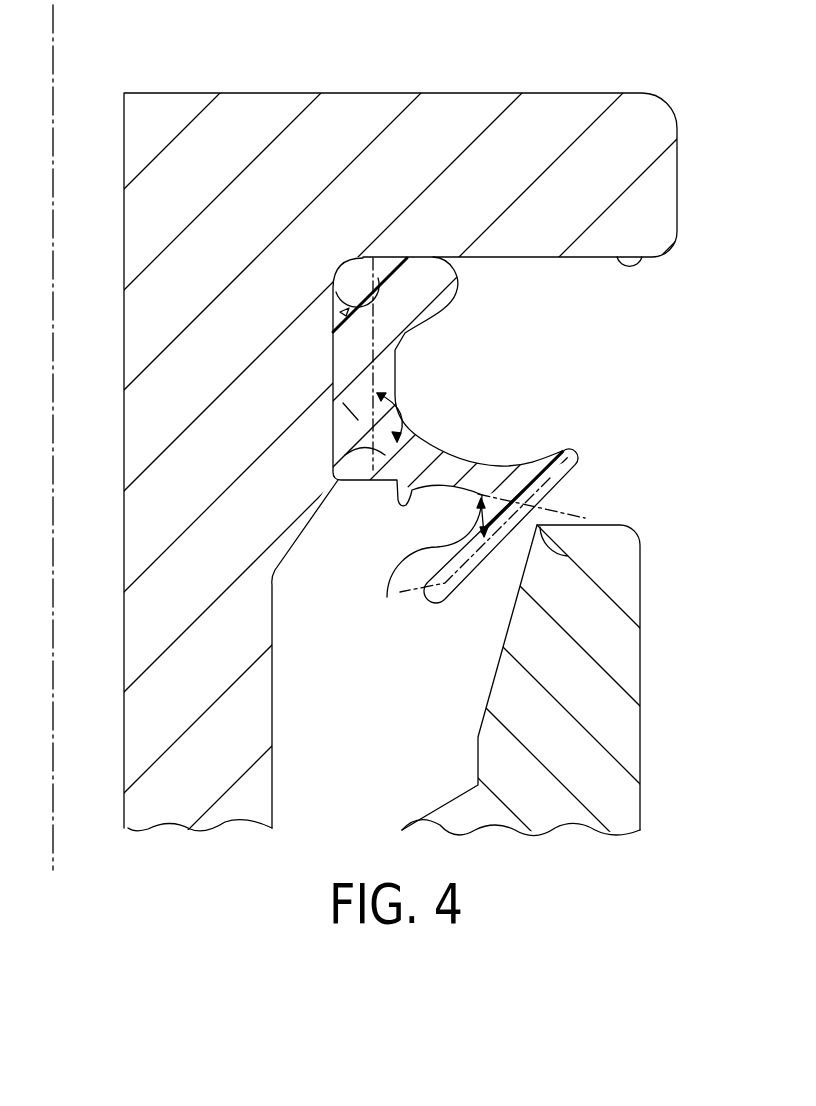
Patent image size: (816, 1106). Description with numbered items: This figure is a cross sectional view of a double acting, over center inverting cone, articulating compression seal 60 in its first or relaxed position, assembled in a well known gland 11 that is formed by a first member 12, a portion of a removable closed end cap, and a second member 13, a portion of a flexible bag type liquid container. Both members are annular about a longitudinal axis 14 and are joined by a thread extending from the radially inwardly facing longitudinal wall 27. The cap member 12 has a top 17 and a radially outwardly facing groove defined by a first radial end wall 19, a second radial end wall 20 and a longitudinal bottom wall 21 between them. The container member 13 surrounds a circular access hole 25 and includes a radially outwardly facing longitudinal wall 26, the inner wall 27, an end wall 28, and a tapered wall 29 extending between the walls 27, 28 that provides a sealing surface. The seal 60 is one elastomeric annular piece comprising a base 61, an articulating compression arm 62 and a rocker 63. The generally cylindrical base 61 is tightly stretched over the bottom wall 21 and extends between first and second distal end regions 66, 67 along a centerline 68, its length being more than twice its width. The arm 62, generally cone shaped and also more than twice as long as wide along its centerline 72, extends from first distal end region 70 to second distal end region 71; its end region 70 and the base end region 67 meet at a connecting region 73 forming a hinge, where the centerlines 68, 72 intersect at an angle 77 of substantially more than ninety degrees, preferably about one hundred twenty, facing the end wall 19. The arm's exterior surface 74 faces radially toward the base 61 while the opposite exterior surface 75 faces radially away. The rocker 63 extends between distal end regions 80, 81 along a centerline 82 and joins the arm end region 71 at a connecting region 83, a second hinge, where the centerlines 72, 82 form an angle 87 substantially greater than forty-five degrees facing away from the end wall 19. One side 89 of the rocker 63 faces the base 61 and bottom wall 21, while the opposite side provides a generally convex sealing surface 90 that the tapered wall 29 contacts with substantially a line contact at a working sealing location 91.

The gland 11 is at (278, 93).
The first member 12 is at (432, 125).
The second member 13 is at (408, 553).
The longitudinal axis 14 is at (53, 70).
The top 17 is at (541, 125).
The first radial end wall 19 is at (642, 257).
The second radial end wall 20 is at (312, 503).
The bottom wall 21 is at (340, 312).
The access hole 25 is at (350, 787).
The radially outwardly facing longitudinal wall 26 is at (642, 738).
The radially inwardly facing longitudinal wall 27 is at (478, 770).
The end wall 28 is at (625, 525).
The tapered wall 29 is at (492, 672).
The articulating compression seal 60 is at (435, 258).
The base 61 is at (390, 358).
The articulating compression arm 62 is at (430, 440).
The rocker 63 is at (580, 495).
The first distal end region of the base 66 is at (358, 278).
The second distal end region of the base 67 is at (337, 428).
The centerline of the base 68 is at (345, 288).
The first distal end region of the arm 70 is at (365, 455).
The second distal end region of the arm 71 is at (468, 496).
The centerline of the articulating compression arm 72 is at (445, 448).
The connecting region 73 is at (358, 436).
The exterior surface of the arm 74 is at (398, 494).
The opposite exterior surface of the arm 75 is at (486, 463).
The angle 77 is at (402, 410).
The first distal end region of the rocker 80 is at (561, 449).
The second distal end region of the rocker 81 is at (430, 598).
The centerline of the rocker 82 is at (455, 597).
The connecting region 83 is at (518, 565).
The angle 87 is at (470, 526).
The side of the rocker 89 is at (395, 580).
The convex sealing surface 90 is at (552, 498).
The working sealing location 91 is at (557, 541).